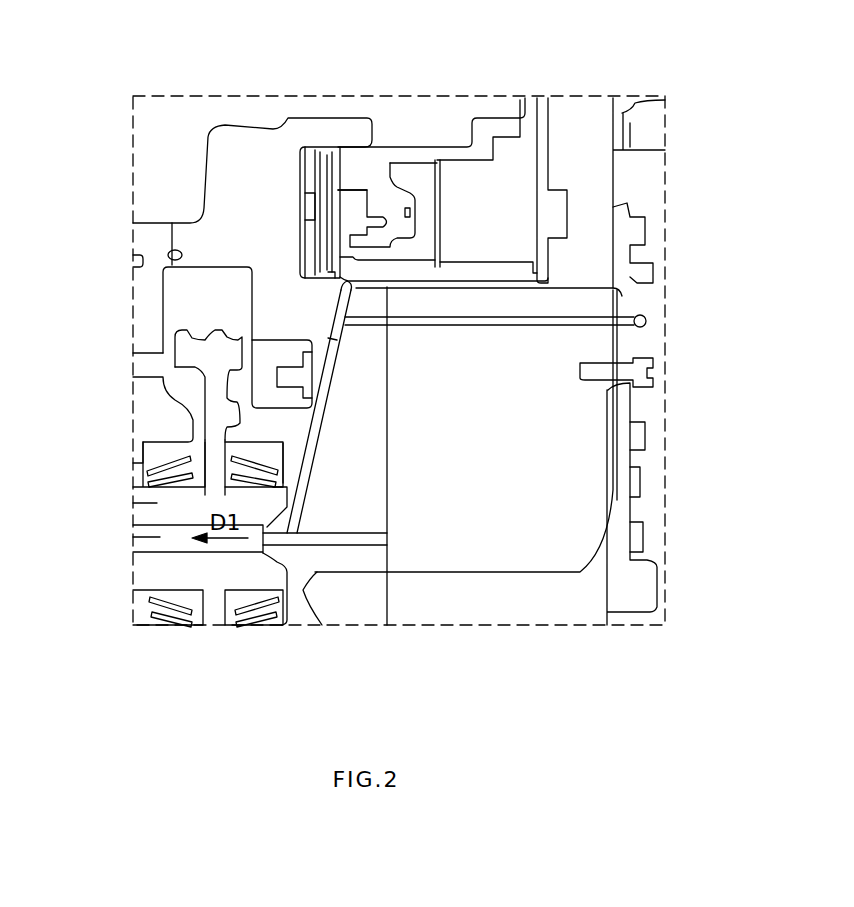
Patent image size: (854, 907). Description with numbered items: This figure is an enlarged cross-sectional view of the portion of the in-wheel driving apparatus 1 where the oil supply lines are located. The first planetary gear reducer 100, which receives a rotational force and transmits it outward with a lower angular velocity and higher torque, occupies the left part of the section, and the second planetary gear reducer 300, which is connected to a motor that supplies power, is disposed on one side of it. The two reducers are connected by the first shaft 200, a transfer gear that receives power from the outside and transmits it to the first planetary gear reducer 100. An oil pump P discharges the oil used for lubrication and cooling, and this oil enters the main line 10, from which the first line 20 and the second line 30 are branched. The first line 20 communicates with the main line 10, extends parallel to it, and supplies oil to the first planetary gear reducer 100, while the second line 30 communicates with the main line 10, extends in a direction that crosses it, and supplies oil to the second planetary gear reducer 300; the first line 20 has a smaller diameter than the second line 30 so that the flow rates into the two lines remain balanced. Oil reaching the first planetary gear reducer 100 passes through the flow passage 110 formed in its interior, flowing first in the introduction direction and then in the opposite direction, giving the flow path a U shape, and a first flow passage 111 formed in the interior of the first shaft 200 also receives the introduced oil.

The in-wheel driving apparatus 1 is at (593, 90).
The main line 10 is at (340, 305).
The oil pump P is at (378, 175).
The first line 20 is at (333, 365).
The second line 30 is at (368, 327).
The first planetary gear reducer 100 is at (144, 330).
The flow passage 110 is at (97, 592).
The first flow passage 111 is at (157, 537).
The first shaft 200 is at (155, 510).
The second planetary gear reducer 300 is at (533, 358).